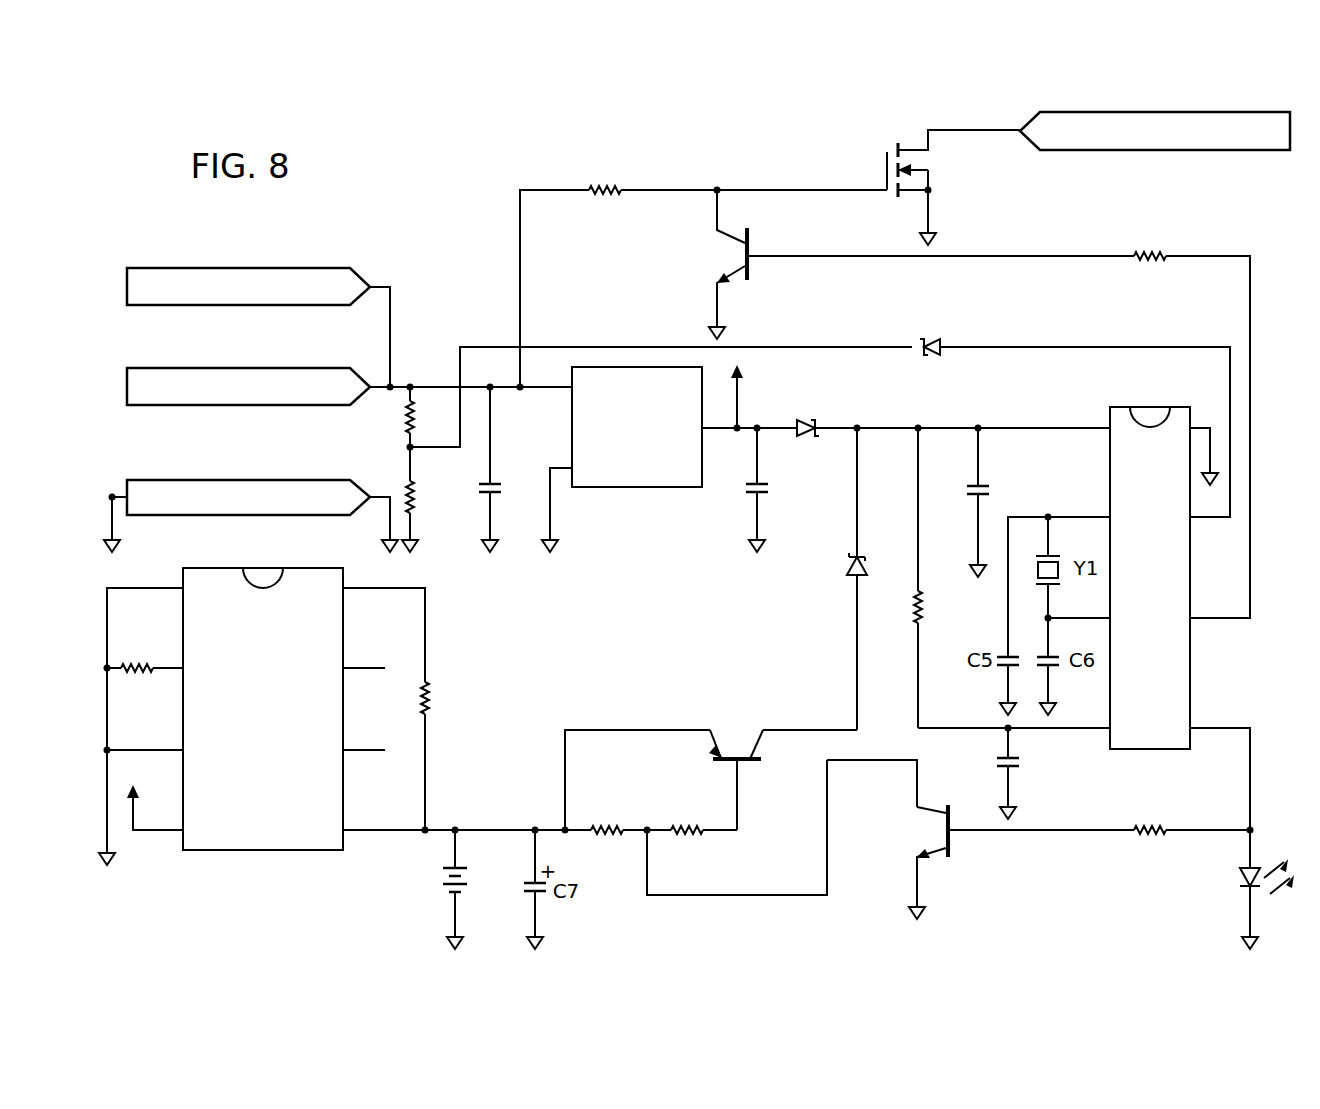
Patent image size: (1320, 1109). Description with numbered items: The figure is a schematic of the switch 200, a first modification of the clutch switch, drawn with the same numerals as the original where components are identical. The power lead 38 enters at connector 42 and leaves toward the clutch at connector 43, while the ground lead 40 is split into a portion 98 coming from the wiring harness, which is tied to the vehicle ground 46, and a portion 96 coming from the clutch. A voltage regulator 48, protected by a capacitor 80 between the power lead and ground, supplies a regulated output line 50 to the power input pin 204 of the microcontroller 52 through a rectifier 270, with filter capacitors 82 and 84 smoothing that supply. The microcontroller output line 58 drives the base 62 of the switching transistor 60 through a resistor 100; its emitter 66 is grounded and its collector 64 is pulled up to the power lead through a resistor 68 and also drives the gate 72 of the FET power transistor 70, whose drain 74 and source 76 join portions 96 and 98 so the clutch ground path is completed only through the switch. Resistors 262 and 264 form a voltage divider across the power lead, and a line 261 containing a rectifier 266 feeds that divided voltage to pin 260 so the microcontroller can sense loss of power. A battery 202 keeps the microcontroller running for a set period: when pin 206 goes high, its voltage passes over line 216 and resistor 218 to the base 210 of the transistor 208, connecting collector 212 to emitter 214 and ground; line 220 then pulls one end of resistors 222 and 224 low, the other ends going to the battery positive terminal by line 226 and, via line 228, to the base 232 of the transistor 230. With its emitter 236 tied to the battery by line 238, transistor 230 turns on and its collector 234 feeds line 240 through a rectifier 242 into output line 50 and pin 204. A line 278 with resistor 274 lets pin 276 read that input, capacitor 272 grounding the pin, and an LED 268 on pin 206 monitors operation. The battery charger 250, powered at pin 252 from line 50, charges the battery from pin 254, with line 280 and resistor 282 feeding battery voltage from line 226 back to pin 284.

The switch 200 is at (440, 226).
The power lead 38 is at (238, 268).
The portion of the ground lead 98 is at (238, 480).
The portion of the ground lead 96 is at (1228, 150).
The connector 42 is at (372, 280).
The connector 43 is at (372, 378).
The ground lead 40 is at (112, 494).
The ground 46 is at (120, 544).
The resistor 262 is at (404, 422).
The resistor 264 is at (418, 486).
The line 261 is at (488, 344).
The capacitor 80 is at (482, 494).
The resistor 68 is at (602, 204).
The switching transistor 60 is at (768, 242).
The collector 64 is at (728, 238).
The emitter 66 is at (712, 296).
The base 62 is at (774, 260).
The resistor 100 is at (1156, 268).
The FET power transistor 70 is at (874, 161).
The gate 72 is at (886, 196).
The drain 74 is at (938, 140).
The source 76 is at (936, 192).
The voltage regulator 48 is at (638, 490).
The output line 50 is at (749, 398).
The rectifier 270 is at (810, 440).
The power input pin 204 is at (1024, 426).
The filter capacitor 82 is at (770, 496).
The line 240 is at (852, 492).
The rectifier 242 is at (846, 568).
The resistor 274 is at (926, 607).
The filter capacitor 84 is at (992, 492).
The microcontroller 52 is at (1150, 576).
The pin 260 is at (1225, 520).
The output line 58 is at (1212, 624).
The pin 276 is at (1090, 734).
The pin 206 is at (1210, 734).
The capacitor 272 is at (1020, 766).
The transistor 230 is at (719, 704).
The emitter 236 is at (702, 728).
The collector 234 is at (752, 740).
The base 232 is at (742, 772).
The line 238 is at (562, 762).
The line 228 is at (742, 822).
The battery charger 250 is at (262, 854).
The pin 252 is at (162, 836).
The pin 284 is at (362, 594).
The resistor 282 is at (414, 700).
The line 280 is at (430, 632).
The pin 254 is at (374, 836).
The line 226 is at (494, 826).
The battery 202 is at (432, 896).
The resistor 222 is at (610, 844).
The resistor 224 is at (690, 844).
The line 220 is at (748, 900).
The line 278 is at (916, 698).
The transistor 208 is at (953, 863).
The collector 212 is at (924, 810).
The emitter 214 is at (912, 880).
The base 210 is at (988, 836).
The resistor 218 is at (1142, 842).
The line 216 is at (1188, 836).
The LED 268 is at (1242, 886).
The rectifier 266 is at (930, 356).